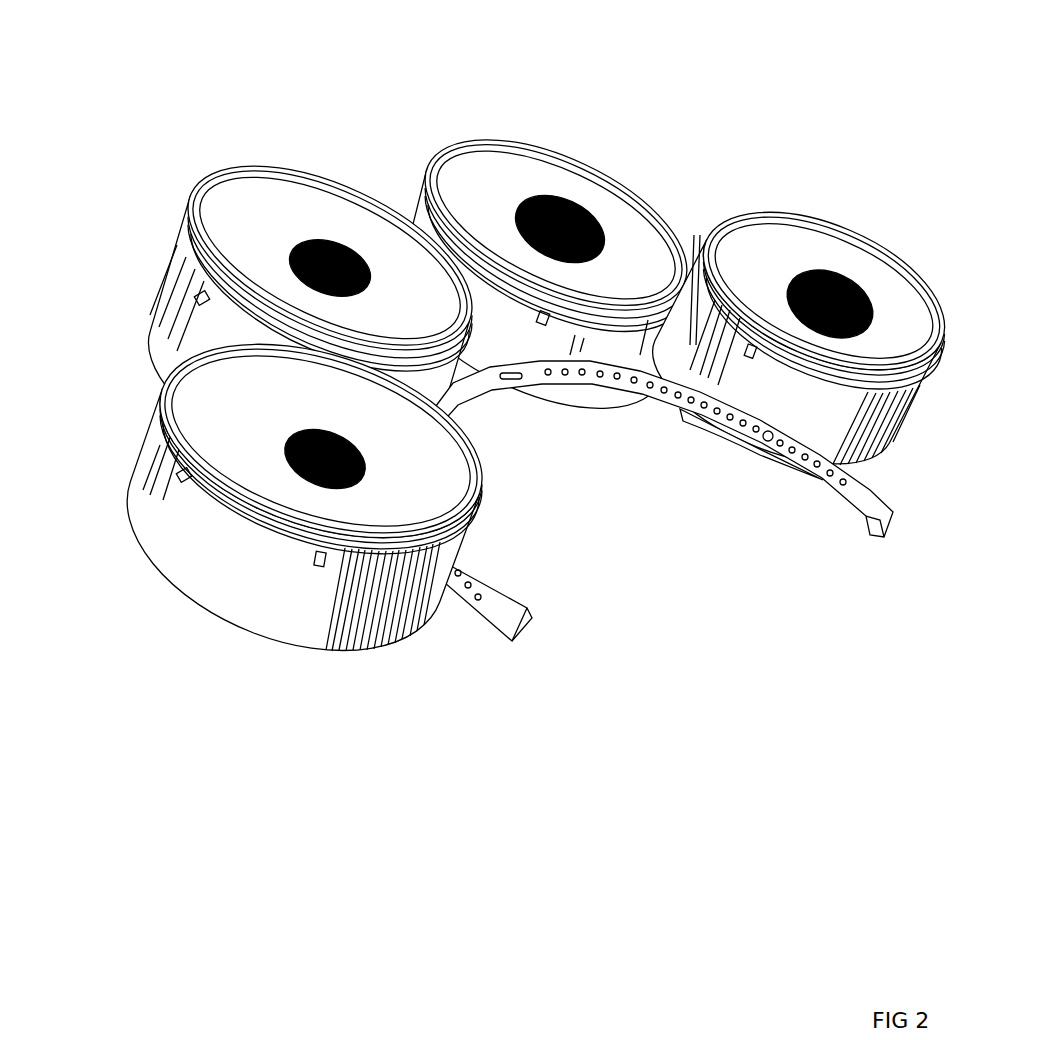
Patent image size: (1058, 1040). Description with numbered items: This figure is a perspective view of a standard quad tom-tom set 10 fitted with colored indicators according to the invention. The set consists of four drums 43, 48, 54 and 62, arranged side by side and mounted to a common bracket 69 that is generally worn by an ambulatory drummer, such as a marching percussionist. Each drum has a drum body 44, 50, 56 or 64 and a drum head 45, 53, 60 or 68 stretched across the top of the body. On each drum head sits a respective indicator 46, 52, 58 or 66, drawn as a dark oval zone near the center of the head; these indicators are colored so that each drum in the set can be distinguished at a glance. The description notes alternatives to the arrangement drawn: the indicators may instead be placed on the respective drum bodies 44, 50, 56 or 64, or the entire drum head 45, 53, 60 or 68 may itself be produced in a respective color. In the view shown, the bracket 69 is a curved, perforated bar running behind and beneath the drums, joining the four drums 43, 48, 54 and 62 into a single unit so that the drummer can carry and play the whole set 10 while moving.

The quad tom-tom set 10 is at (133, 90).
The drum 43 is at (180, 588).
The drum body 44 is at (259, 588).
The drum head 45 is at (424, 504).
The indicator 46 is at (290, 433).
The drum 48 is at (152, 291).
The drum body 50 is at (180, 355).
The indicator 52 is at (300, 242).
The drum head 53 is at (424, 320).
The drum 54 is at (607, 163).
The drum body 56 is at (628, 356).
The indicator 58 is at (522, 204).
The drum head 60 is at (652, 282).
The drum 62 is at (850, 226).
The drum body 64 is at (818, 409).
The indicator 66 is at (795, 276).
The drum head 68 is at (912, 346).
The bracket 69 is at (866, 520).